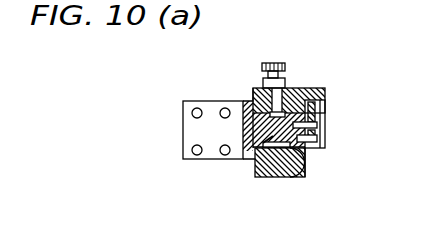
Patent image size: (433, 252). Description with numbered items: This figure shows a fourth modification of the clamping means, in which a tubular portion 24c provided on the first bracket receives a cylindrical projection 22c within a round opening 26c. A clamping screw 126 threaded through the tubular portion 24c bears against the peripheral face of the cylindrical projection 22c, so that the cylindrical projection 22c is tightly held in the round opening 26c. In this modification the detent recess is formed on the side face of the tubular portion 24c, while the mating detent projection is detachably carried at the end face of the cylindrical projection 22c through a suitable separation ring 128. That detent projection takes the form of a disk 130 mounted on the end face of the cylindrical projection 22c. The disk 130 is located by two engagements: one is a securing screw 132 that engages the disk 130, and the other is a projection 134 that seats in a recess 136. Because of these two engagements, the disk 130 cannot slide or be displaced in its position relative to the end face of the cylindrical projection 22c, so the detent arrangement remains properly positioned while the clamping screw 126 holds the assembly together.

The clamping screw 126 is at (260, 66).
The tubular portion 24c is at (290, 100).
The disk 130 is at (323, 110).
The securing screw 132 is at (326, 118).
The projection 134 is at (324, 132).
The separation ring 128 is at (310, 162).
The recess 136 is at (300, 168).
The cylindrical projection 22c is at (250, 160).
The round opening 26c is at (291, 177).